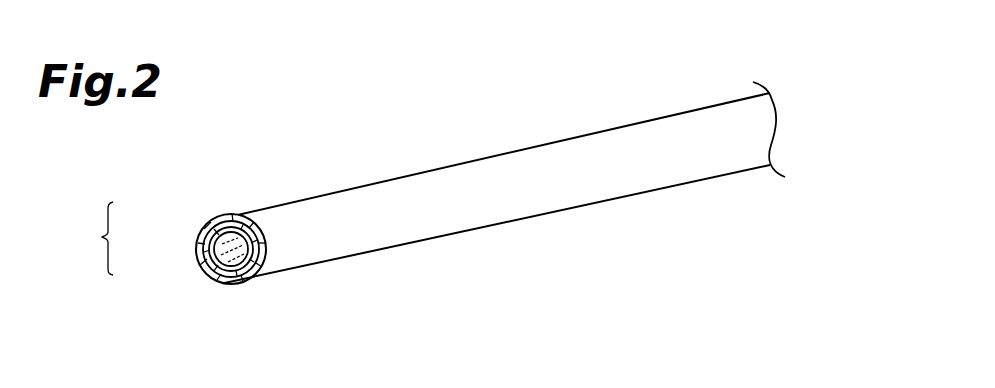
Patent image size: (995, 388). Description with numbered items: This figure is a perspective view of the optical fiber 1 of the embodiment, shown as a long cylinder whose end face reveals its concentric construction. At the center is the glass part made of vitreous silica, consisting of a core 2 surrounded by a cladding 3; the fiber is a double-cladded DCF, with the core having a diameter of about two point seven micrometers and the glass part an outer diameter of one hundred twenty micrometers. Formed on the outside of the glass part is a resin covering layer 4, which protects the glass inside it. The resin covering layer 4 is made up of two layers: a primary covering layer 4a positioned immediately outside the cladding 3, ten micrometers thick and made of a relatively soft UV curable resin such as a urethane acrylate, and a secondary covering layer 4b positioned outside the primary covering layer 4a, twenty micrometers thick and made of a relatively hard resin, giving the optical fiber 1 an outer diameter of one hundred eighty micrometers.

The optical fiber 1 is at (530, 163).
The core 2 is at (231, 266).
The cladding 3 is at (232, 231).
The resin covering layer 4 is at (97, 238).
The primary covering layer 4a is at (204, 229).
The secondary covering layer 4b is at (204, 248).